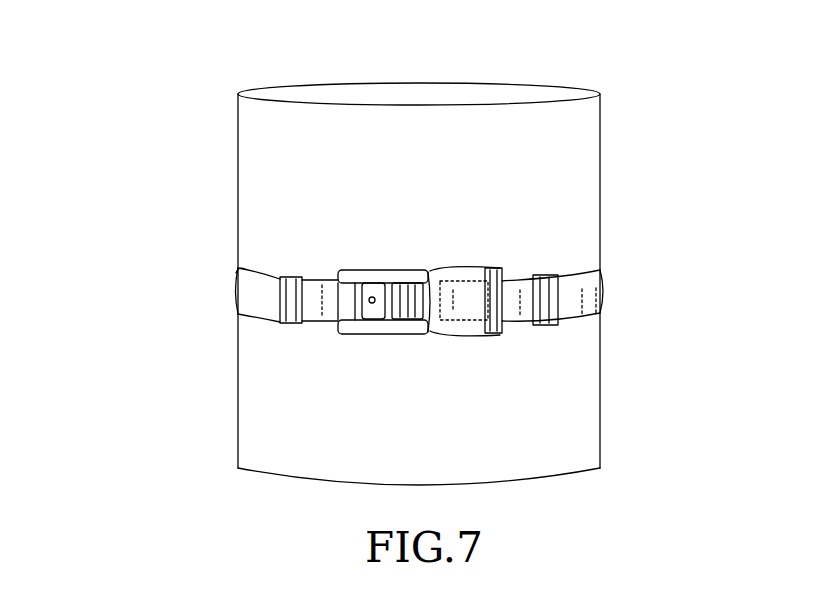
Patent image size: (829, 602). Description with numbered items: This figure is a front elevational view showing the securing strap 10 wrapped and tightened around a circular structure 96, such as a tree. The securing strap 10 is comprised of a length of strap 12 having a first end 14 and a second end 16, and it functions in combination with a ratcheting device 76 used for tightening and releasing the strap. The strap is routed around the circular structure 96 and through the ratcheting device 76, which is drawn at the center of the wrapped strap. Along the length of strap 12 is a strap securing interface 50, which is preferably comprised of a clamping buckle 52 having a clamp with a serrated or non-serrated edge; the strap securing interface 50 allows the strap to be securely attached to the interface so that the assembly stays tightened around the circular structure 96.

The securing strap 10 is at (113, 50).
The length of strap 12 is at (267, 305).
The first end 14 is at (601, 272).
The second end 16 is at (236, 277).
The strap securing interface 50 is at (646, 354).
The clamping buckle 52 is at (558, 325).
The ratcheting device 76 is at (362, 326).
The circular structure 96 is at (548, 135).